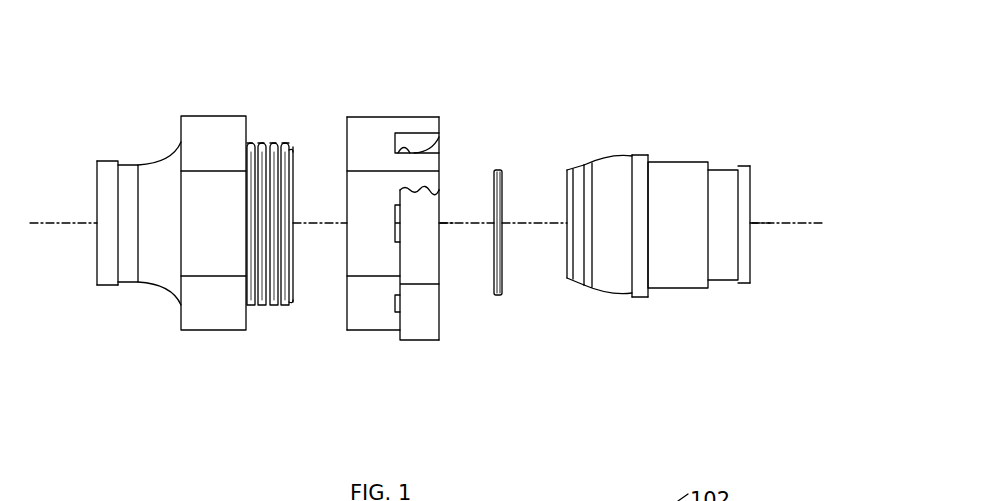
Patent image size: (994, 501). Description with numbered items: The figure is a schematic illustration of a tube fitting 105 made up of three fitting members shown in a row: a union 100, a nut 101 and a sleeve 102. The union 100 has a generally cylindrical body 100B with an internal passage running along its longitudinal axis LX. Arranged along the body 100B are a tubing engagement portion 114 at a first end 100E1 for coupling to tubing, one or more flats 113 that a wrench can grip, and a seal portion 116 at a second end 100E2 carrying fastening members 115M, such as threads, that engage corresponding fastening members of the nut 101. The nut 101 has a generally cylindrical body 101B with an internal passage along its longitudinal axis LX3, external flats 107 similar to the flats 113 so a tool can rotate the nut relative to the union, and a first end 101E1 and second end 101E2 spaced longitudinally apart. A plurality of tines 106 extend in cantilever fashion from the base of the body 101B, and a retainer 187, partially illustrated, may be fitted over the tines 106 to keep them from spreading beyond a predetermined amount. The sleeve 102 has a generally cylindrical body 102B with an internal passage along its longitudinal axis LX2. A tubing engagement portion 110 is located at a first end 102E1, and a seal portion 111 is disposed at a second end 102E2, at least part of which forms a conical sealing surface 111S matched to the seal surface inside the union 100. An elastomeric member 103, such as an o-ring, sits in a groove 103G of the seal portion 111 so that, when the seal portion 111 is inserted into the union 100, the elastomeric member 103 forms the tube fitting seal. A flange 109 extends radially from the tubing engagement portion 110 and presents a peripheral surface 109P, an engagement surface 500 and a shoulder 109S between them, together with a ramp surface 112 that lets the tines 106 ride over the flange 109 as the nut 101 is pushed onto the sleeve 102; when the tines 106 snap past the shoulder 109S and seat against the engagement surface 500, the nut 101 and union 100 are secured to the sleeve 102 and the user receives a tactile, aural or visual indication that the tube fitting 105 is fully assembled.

The tube fitting 105 is at (190, 50).
The union 100 is at (178, 115).
The tubing engagement portion 114 is at (113, 158).
The first end 100E1 is at (93, 183).
The body 100B is at (108, 288).
The flats 113 is at (213, 331).
The fastening members 115M is at (272, 310).
The seal portion 116 is at (267, 135).
The second end 100E2 is at (300, 141).
The longitudinal axis LX is at (82, 228).
The nut 101 is at (394, 86).
The flats 107 is at (371, 117).
The tines 106 is at (412, 117).
The retainer 187 is at (418, 342).
The first end 101E1 is at (342, 318).
The body 101B is at (370, 331).
The second end 101E2 is at (446, 326).
The elastomeric member 103 is at (499, 170).
The groove 103G is at (585, 287).
The longitudinal axis LX3 is at (452, 222).
The sleeve 102 is at (676, 106).
The second end 102E2 is at (562, 282).
The first end 102E1 is at (757, 185).
The body 102B is at (745, 284).
The ramp surface 112 is at (628, 296).
The sealing surface 111S is at (572, 167).
The seal portion 111 is at (602, 163).
The flange 109 is at (637, 297).
The peripheral surface 109P is at (640, 153).
The shoulder 109S is at (648, 296).
The engagement surface 500 is at (648, 153).
The tubing engagement portion 110 is at (697, 288).
The longitudinal axis LX2 is at (760, 222).